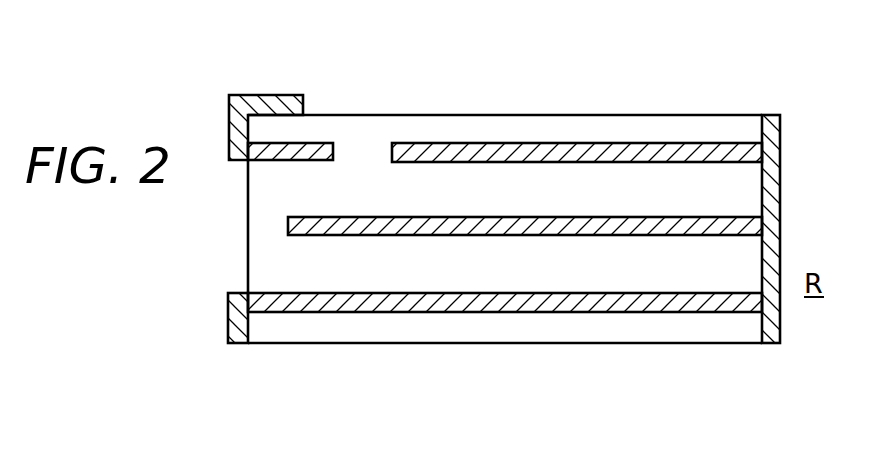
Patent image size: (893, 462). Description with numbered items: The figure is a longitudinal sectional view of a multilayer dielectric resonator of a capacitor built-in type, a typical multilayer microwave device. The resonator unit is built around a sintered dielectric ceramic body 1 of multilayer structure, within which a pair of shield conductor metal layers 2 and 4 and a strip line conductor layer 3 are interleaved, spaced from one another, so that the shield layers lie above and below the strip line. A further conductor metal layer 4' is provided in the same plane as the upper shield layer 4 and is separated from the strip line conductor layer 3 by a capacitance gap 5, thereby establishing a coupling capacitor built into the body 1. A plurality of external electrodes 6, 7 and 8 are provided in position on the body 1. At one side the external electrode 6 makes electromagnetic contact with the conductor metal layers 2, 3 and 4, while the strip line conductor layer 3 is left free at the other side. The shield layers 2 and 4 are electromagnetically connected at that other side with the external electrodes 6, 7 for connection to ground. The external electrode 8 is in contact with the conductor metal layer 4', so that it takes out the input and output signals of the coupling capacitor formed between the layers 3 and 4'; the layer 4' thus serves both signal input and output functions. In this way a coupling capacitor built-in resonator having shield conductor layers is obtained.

The sintered dielectric ceramic body 1 is at (620, 332).
The shield conductor metal layer 2 is at (476, 313).
The strip line conductor layer 3 is at (523, 217).
The shield conductor metal layer 4 is at (577, 94).
The conductor metal layer 4' is at (298, 92).
The capacitance gap 5 is at (372, 152).
The external electrode 6 is at (786, 126).
The external electrode 7 is at (232, 343).
The external electrode 8 is at (308, 97).